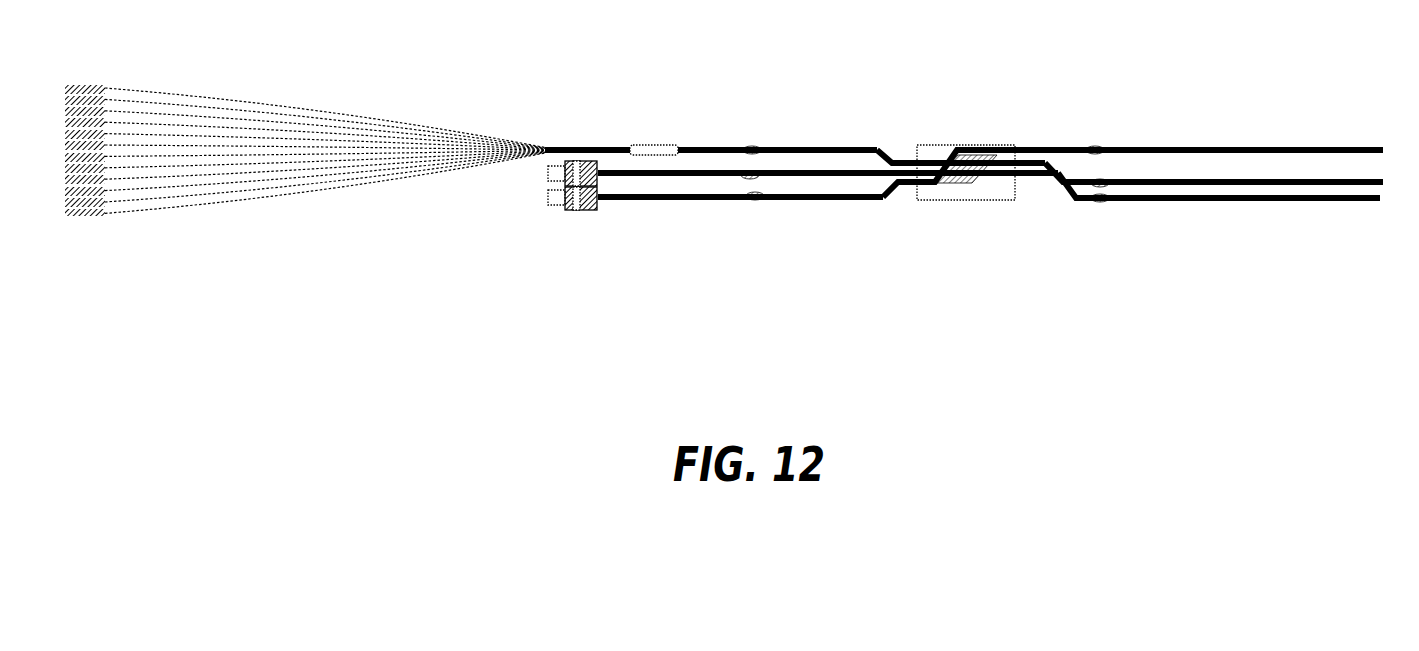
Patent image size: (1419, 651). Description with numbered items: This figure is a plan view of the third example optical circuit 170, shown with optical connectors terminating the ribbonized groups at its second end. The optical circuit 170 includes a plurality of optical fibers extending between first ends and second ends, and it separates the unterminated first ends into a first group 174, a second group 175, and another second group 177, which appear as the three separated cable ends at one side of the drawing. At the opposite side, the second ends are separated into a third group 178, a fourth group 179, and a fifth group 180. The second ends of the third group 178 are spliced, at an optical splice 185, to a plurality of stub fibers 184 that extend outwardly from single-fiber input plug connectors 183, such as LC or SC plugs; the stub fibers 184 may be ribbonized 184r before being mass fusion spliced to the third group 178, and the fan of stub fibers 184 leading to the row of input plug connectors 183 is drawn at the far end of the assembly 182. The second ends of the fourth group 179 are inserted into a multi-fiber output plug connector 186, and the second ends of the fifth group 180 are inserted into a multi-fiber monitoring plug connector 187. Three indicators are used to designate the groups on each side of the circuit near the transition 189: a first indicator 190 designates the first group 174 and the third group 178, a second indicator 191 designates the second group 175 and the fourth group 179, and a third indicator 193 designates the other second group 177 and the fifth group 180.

The optical circuit 170 is at (961, 172).
The first group 174 is at (1377, 153).
The second group 175 is at (1385, 180).
The another second group 177 is at (1380, 200).
The third group 178 is at (732, 136).
The fourth group 179 is at (714, 188).
The fifth group 180 is at (688, 212).
The cable assembly 182 is at (336, 177).
The input plug connector 183 is at (85, 83).
The stub fibers 184 is at (177, 93).
The ribbonized stub fibers 184r is at (603, 148).
The optical splice 185 is at (663, 145).
The output plug connector 186 is at (553, 168).
The monitoring plug connector 187 is at (573, 210).
The transition housing 189 is at (1003, 200).
The first indicator 190 is at (752, 150).
The second indicator 191 is at (750, 175).
The third indicator 193 is at (755, 196).